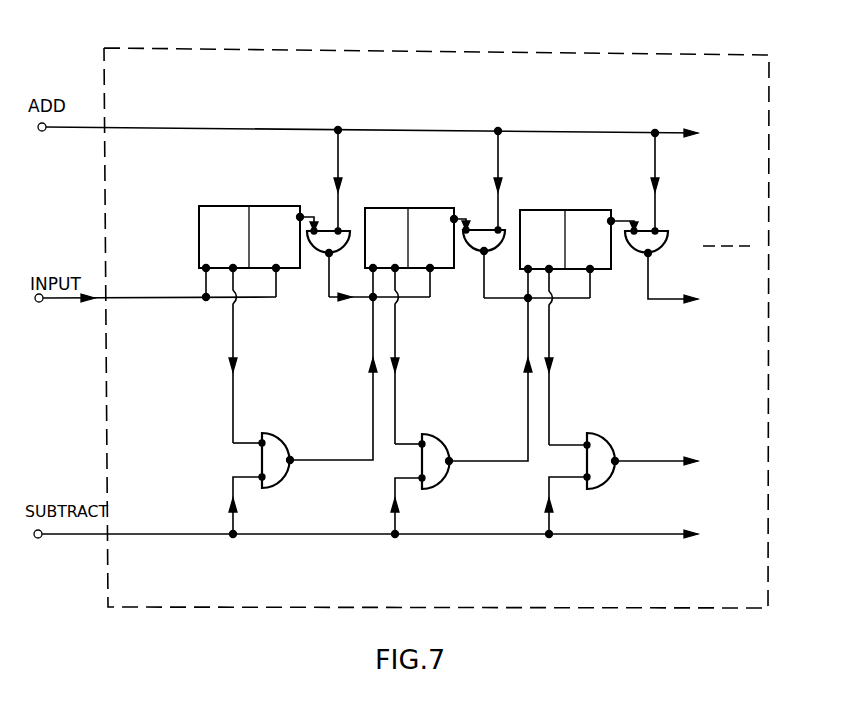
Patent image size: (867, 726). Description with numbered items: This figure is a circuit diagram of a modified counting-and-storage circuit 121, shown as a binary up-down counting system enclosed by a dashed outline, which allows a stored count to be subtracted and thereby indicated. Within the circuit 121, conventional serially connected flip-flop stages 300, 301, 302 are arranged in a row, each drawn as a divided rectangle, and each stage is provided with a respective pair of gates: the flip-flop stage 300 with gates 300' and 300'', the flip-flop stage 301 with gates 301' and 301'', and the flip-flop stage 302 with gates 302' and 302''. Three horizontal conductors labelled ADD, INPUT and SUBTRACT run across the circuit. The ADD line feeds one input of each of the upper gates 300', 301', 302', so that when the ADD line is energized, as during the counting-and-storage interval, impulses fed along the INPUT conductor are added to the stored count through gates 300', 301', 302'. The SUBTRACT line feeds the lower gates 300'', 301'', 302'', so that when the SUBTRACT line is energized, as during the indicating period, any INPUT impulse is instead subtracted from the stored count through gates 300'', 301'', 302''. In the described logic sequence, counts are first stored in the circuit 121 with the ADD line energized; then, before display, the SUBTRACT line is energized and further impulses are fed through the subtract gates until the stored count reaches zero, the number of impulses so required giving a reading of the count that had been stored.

The counting-and-storing circuit 121 is at (436, 317).
The flip-flop stage 300 is at (251, 309).
The flip-flop stage 301 is at (411, 310).
The flip-flop stage 302 is at (567, 310).
The gate 300' is at (317, 270).
The gate 301' is at (467, 272).
The gate 302' is at (648, 274).
The gate 300'' is at (303, 401).
The gate 301'' is at (461, 401).
The gate 302'' is at (621, 468).